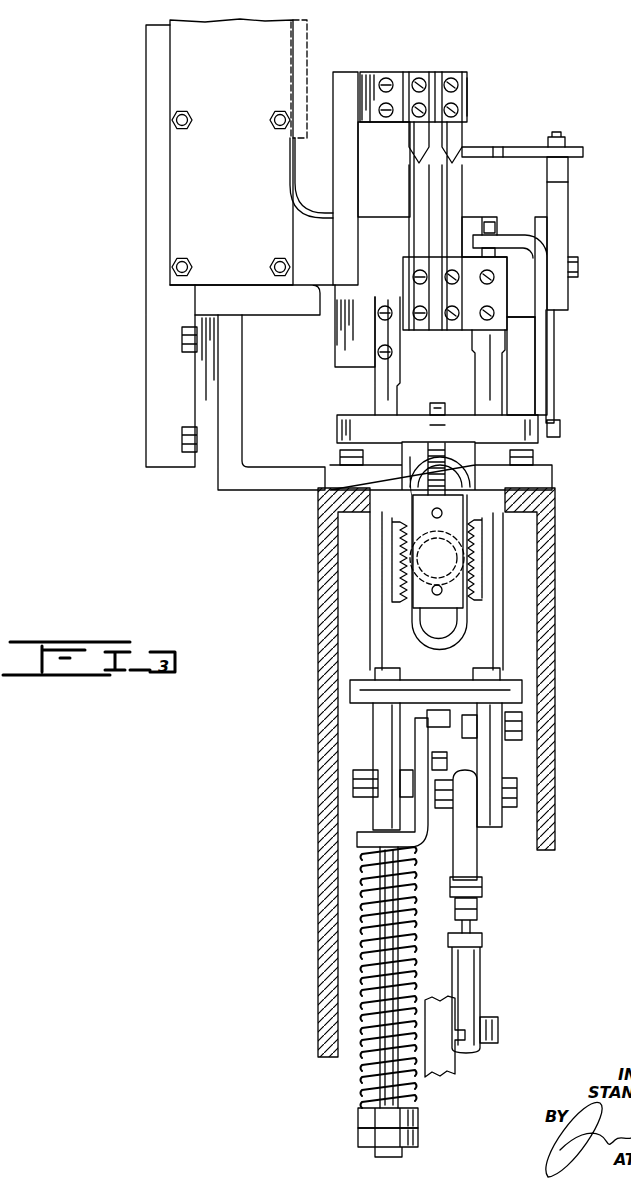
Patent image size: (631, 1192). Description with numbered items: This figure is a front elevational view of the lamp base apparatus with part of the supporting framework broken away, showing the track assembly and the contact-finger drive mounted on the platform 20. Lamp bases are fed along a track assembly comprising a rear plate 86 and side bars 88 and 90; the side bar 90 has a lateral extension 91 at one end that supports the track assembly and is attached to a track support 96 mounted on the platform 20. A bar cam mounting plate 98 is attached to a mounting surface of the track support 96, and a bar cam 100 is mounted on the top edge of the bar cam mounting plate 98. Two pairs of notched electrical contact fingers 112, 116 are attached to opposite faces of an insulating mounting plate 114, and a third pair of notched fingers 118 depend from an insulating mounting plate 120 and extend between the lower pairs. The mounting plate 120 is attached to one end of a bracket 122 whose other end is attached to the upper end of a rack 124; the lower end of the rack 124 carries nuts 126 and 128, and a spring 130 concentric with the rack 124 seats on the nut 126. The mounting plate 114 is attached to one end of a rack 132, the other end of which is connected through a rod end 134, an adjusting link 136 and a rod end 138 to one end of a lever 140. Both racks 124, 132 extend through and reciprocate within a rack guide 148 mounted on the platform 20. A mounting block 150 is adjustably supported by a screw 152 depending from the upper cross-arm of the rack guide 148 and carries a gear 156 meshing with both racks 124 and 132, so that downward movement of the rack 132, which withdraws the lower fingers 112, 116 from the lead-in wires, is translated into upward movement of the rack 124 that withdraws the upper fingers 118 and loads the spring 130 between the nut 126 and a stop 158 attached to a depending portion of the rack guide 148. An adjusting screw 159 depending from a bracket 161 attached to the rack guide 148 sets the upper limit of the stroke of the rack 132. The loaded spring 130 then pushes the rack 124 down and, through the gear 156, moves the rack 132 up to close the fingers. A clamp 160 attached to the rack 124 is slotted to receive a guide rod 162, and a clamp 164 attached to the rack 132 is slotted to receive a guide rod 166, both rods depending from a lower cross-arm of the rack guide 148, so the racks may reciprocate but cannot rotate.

The platform 20 is at (555, 748).
The rear plate 86 is at (180, 145).
The side bar 88 is at (308, 47).
The side bar 90 is at (155, 50).
The lateral extension 91 is at (205, 460).
The track support 96 is at (262, 493).
The bar cam mounting plate 98 is at (558, 240).
The bar cam 100 is at (524, 128).
The notched electrical contact fingers 112 is at (414, 178).
The mounting plate 114 is at (468, 322).
The notched electrical contact fingers 116 is at (455, 178).
The notched electrical contact fingers 118 is at (456, 92).
The mounting plate 120 is at (405, 72).
The bracket 122 is at (353, 70).
The rack 124 is at (377, 387).
The nut 126 is at (410, 1118).
The nut 128 is at (410, 1138).
The spring 130 is at (365, 1068).
The rack 132 is at (478, 368).
The rod end 134 is at (470, 875).
The adjusting link 136 is at (475, 912).
The rod end 138 is at (478, 970).
The lever 140 is at (447, 1065).
The rack guide 148 is at (525, 440).
The mounting block 150 is at (412, 605).
The screw 152 is at (437, 408).
The gear 156 is at (465, 563).
The stop 158 is at (358, 837).
The adjusting screw 159 is at (488, 225).
The clamp 160 is at (365, 765).
The bracket 161 is at (548, 345).
The guide rod 162 is at (380, 735).
The clamp 164 is at (520, 722).
The guide rod 166 is at (480, 822).